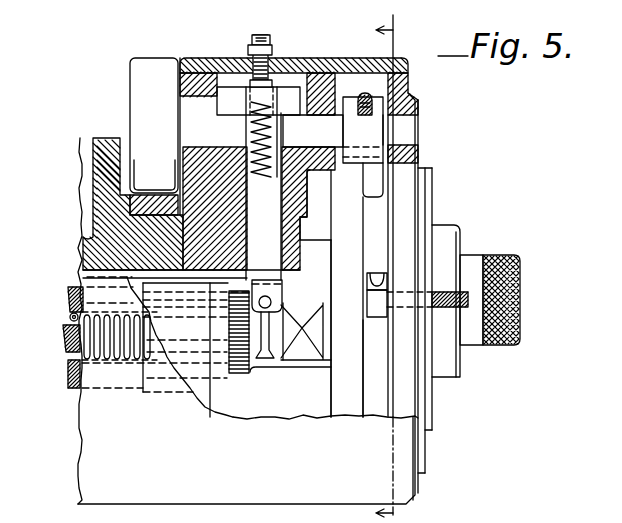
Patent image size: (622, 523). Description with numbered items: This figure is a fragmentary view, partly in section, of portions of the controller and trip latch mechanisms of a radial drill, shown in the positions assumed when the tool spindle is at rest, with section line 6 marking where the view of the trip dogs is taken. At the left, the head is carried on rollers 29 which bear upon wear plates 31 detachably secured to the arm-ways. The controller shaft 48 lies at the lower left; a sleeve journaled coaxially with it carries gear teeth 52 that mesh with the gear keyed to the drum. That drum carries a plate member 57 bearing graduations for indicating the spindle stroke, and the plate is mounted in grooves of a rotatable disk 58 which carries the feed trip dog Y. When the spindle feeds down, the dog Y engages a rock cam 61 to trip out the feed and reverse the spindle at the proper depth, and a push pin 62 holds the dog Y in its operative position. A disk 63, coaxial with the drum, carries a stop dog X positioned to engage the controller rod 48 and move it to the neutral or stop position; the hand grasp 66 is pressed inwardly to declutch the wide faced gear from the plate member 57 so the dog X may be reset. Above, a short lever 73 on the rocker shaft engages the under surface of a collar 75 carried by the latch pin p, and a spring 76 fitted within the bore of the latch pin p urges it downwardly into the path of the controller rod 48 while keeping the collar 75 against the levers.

The rollers 29 is at (142, 90).
The wear plates 31 is at (160, 190).
The controller shaft 48 is at (64, 352).
The gear teeth 52 is at (245, 375).
The plate member 57 is at (445, 224).
The rotatable disk 58 is at (377, 368).
The rock cam 61 is at (357, 167).
The push pin 62 is at (367, 280).
The disk 63 is at (344, 328).
The hand grasp 66 is at (507, 347).
The short lever 73 is at (284, 128).
The collar 75 is at (233, 95).
The spring 76 is at (247, 128).
The section line 6— 6 is at (393, 266).
The latch pin p is at (264, 222).
The stop dog X is at (318, 307).
The feed trip dog Y is at (375, 312).